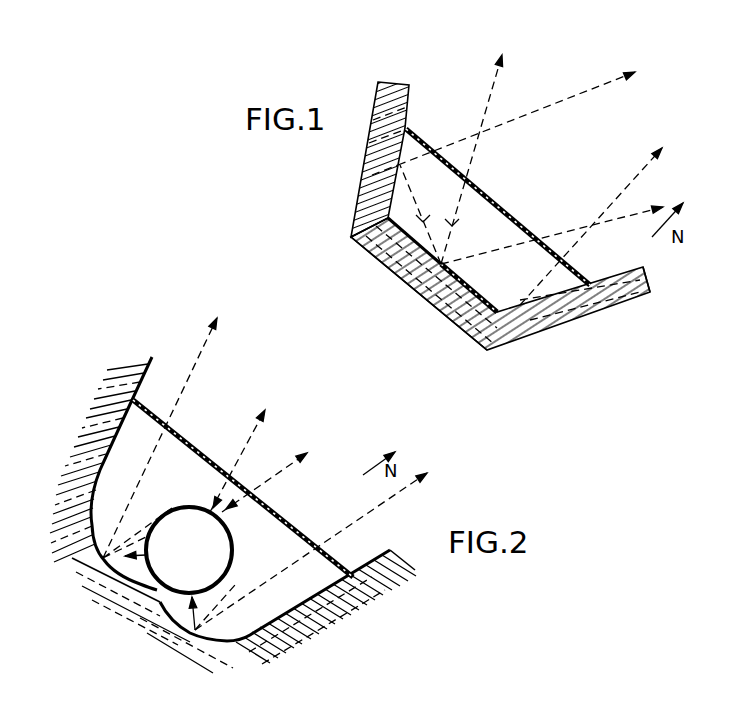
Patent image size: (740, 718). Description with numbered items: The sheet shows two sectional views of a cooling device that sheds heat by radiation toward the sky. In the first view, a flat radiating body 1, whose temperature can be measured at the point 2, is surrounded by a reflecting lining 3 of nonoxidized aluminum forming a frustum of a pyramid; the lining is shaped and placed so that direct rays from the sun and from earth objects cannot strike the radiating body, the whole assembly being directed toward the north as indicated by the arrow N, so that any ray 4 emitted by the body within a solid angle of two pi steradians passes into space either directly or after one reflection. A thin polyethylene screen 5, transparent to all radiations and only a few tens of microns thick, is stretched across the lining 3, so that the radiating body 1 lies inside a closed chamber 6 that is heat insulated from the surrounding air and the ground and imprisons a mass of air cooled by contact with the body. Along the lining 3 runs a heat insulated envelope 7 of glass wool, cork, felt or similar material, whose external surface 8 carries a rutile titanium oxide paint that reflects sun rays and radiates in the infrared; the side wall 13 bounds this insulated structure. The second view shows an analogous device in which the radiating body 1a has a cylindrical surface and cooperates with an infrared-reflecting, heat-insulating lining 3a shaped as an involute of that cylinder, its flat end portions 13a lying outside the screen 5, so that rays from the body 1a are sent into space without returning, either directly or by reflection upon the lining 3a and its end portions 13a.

In FIG. 1, the flat radiating body 1 is at (370, 248).
In FIG. 1, the temperature measuring point 2 is at (434, 268).
In FIG. 1, the reflecting lining 3 is at (398, 177).
In FIG. 1, the ray 4 is at (451, 159).
In FIG. 2, the ray 4 is at (203, 618).
In FIG. 1, the polyethylene screen 5 is at (424, 148).
In FIG. 2, the polyethylene screen 5 is at (185, 440).
In FIG. 1, the closed chamber 6 is at (491, 241).
In FIG. 1, the heat insulated envelope 7 is at (538, 314).
In FIG. 2, the heat insulated envelope 7 is at (123, 592).
In FIG. 1, the external surface 8 is at (629, 296).
In FIG. 1, the side wall 13 is at (410, 86).
In FIG. 2, the cylindrical radiating body 1a is at (152, 503).
In FIG. 2, the lining 3a is at (93, 462).
In FIG. 2, the end portions 13a is at (150, 357).